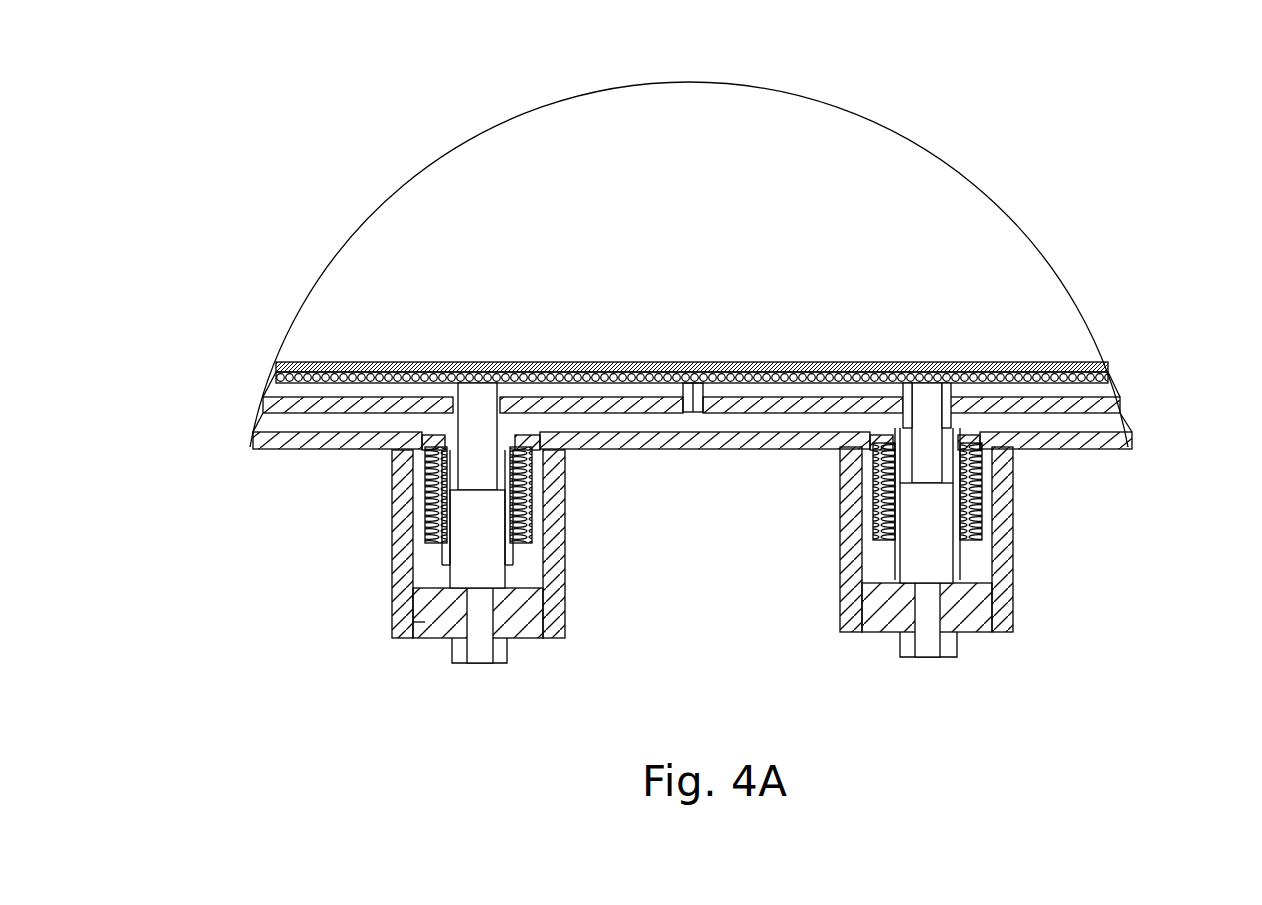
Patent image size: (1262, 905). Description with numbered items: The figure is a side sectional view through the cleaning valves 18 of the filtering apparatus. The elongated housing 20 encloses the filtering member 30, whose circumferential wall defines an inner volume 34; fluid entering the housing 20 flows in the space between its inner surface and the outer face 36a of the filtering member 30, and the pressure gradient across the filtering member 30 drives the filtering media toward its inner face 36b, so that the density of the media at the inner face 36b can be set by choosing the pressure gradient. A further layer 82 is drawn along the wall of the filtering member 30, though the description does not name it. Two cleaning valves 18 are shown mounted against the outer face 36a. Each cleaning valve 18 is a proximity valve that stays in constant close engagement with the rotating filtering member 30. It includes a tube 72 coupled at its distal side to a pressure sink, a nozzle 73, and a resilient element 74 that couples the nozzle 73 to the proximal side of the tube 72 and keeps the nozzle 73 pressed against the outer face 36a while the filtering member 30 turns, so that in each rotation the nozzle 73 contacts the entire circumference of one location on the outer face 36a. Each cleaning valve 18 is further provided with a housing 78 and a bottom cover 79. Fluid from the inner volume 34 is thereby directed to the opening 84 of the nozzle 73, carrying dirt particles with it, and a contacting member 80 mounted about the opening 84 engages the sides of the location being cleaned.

The cleaning valve 18 is at (617, 536).
The housing 20 is at (256, 506).
The filtering member 30 is at (692, 286).
The inner volume 34 is at (689, 249).
The outer face 36a is at (692, 496).
The inner face 36b is at (691, 326).
The tube 72 is at (975, 539).
The nozzle 73 is at (1004, 321).
The resilient element 74 is at (1003, 508).
The housing 78 is at (1023, 497).
The bottom cover 79 is at (897, 653).
The contacting member 80 is at (1175, 402).
The beaded layer 82 is at (692, 334).
The opening 84 is at (950, 349).